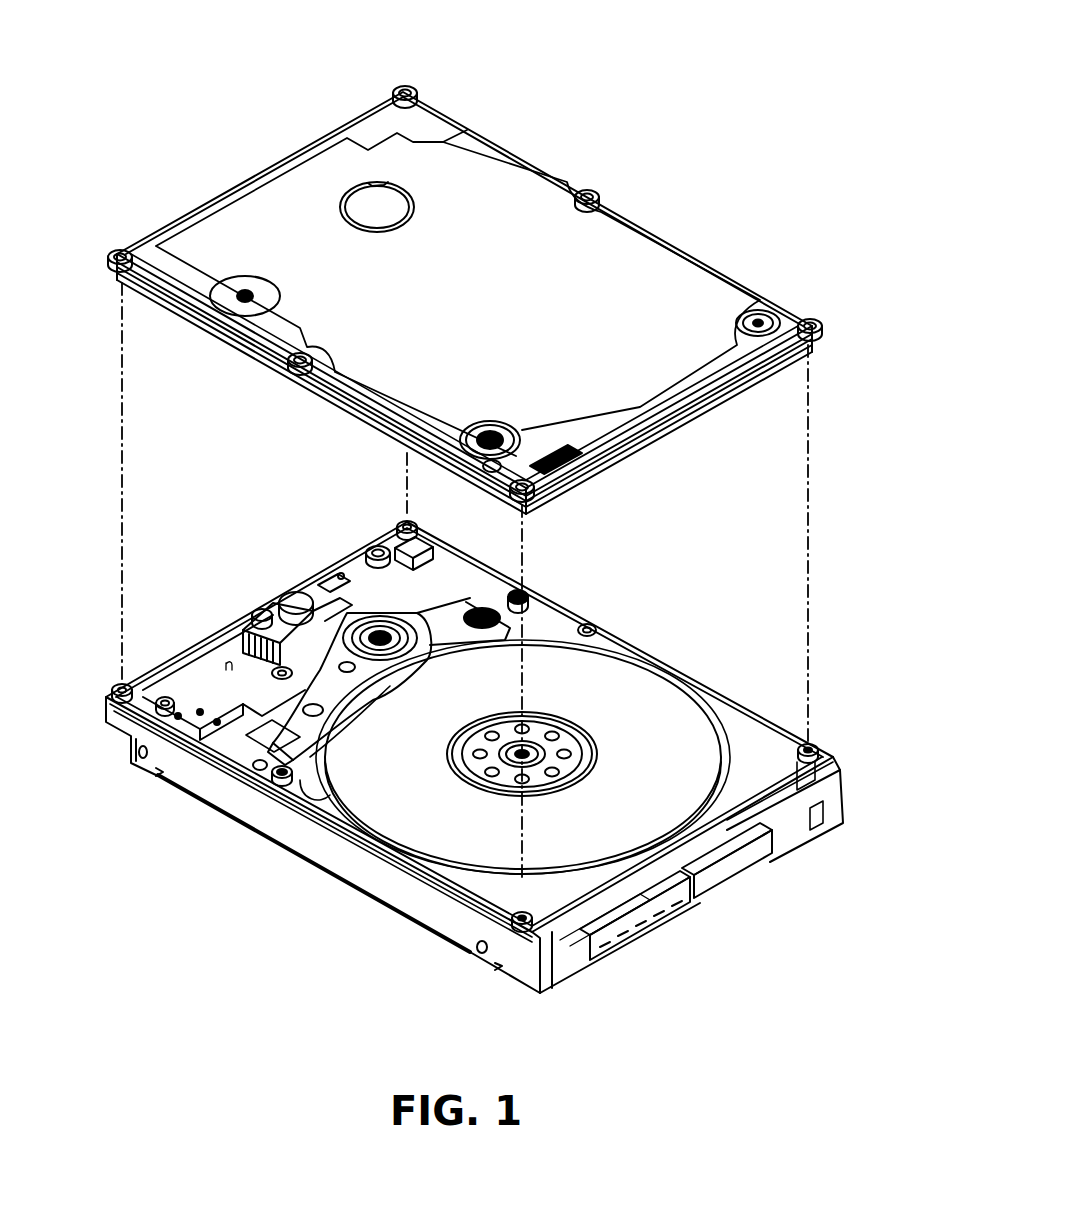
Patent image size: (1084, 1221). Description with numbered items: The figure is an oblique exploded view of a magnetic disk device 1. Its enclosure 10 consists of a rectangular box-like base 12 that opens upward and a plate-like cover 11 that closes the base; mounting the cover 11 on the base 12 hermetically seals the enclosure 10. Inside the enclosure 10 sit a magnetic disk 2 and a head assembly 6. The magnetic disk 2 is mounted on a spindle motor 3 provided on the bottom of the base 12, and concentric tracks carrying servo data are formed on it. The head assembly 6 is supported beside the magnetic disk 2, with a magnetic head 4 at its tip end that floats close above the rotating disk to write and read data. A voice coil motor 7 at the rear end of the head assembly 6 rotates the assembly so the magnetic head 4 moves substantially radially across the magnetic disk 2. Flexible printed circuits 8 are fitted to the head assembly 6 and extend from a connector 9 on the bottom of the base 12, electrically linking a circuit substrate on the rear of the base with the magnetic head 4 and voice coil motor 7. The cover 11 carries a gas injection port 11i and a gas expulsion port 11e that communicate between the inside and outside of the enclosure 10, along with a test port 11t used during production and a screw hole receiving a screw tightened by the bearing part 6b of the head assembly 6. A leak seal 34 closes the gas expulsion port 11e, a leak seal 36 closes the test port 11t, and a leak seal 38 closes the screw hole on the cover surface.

The magnetic disk device 1 is at (474, 497).
The enclosure 10 is at (474, 539).
The cover 11 is at (465, 300).
The base 12 is at (474, 741).
The magnetic disk 2 is at (636, 784).
The spindle motor 3 is at (538, 731).
The magnetic head 4 is at (376, 673).
The head assembly 6 is at (330, 686).
The bearing part 6b is at (379, 626).
The voice coil motor 7 is at (327, 586).
The flexible printed circuits 8 is at (217, 762).
The connector 9 is at (218, 688).
The gas injection port 11i is at (247, 284).
The gas expulsion port 11e is at (761, 308).
The test port 11t is at (492, 428).
The leak seal 34 is at (740, 324).
The leak seal 36 is at (512, 440).
The leak seal 38 is at (395, 204).